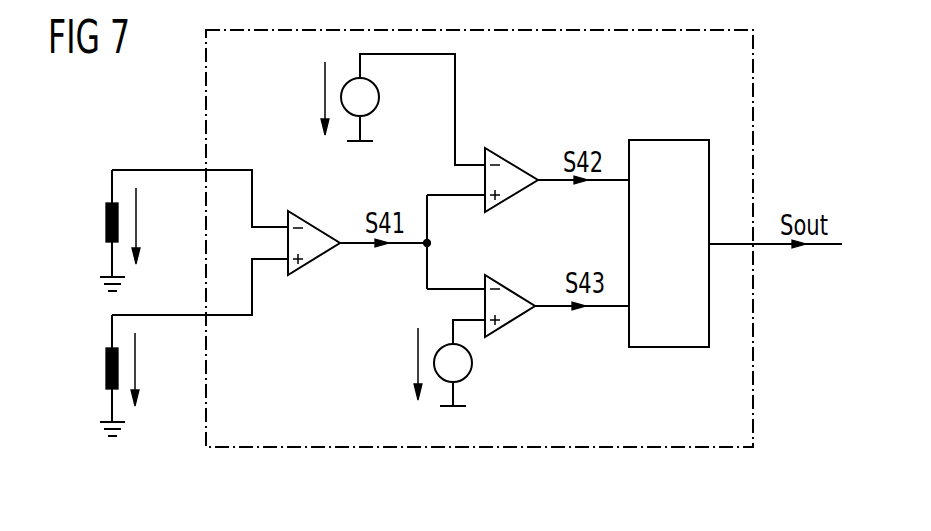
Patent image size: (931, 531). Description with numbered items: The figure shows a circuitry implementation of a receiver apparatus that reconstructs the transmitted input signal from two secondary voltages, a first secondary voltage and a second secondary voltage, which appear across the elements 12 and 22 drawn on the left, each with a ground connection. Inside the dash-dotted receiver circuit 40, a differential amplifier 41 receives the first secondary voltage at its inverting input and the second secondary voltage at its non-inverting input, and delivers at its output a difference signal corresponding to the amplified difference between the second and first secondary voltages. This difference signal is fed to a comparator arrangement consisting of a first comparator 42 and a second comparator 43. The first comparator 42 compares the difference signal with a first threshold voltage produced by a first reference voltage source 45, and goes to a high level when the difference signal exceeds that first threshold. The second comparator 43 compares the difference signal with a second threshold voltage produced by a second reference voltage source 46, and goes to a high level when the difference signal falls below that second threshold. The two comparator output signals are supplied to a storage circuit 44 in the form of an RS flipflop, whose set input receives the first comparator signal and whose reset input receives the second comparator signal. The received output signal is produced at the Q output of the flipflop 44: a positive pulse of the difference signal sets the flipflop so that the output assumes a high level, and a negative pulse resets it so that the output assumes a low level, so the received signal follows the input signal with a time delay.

The first measuring resistor 12 is at (105, 224).
The second measuring resistor 22 is at (105, 369).
The receiver circuit 40 is at (753, 395).
The differential amplifier 41 is at (318, 262).
The first comparator 42 is at (512, 162).
The second comparator 43 is at (513, 285).
The storage circuit 44 is at (670, 140).
The first reference voltage source 45 is at (379, 97).
The second reference voltage source 46 is at (472, 363).